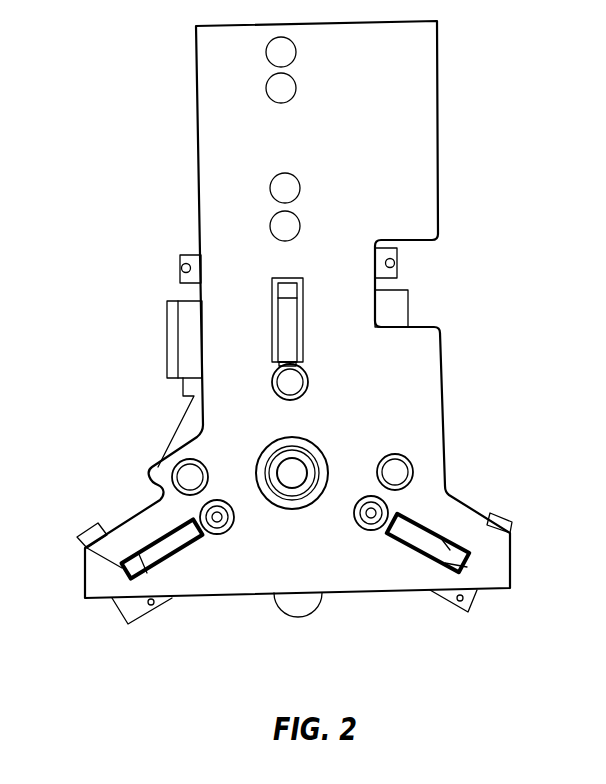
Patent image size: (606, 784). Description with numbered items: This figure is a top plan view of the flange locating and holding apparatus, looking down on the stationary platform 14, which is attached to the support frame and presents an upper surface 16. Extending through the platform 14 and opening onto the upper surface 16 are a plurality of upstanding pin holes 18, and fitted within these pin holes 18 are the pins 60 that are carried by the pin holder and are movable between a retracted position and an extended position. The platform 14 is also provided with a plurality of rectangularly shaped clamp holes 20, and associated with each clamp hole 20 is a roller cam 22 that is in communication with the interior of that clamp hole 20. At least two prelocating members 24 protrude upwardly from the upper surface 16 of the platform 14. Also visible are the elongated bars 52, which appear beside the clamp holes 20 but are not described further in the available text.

The stationary platform 14 is at (198, 173).
The upper surface 16 is at (356, 413).
The pin holes 18 is at (289, 382).
The clamp holes 20 is at (85, 556).
The roller cam 22 is at (182, 268).
The prelocating members 24 is at (223, 533).
The guide bar 52 is at (152, 548).
The pins 60 is at (299, 376).